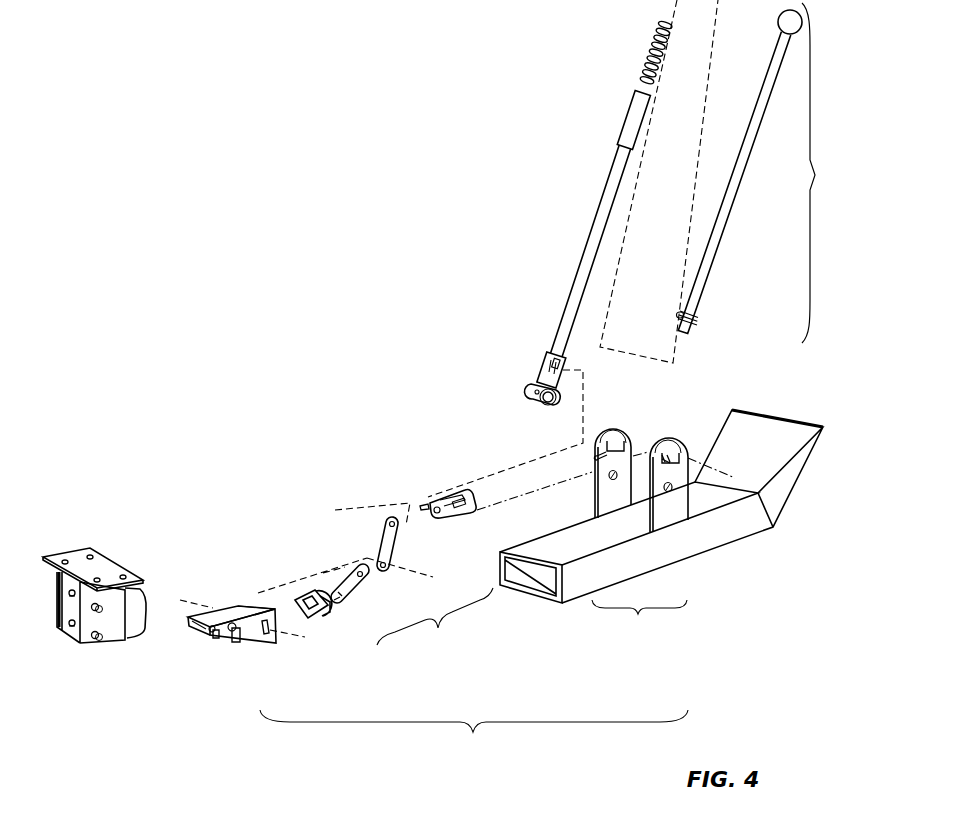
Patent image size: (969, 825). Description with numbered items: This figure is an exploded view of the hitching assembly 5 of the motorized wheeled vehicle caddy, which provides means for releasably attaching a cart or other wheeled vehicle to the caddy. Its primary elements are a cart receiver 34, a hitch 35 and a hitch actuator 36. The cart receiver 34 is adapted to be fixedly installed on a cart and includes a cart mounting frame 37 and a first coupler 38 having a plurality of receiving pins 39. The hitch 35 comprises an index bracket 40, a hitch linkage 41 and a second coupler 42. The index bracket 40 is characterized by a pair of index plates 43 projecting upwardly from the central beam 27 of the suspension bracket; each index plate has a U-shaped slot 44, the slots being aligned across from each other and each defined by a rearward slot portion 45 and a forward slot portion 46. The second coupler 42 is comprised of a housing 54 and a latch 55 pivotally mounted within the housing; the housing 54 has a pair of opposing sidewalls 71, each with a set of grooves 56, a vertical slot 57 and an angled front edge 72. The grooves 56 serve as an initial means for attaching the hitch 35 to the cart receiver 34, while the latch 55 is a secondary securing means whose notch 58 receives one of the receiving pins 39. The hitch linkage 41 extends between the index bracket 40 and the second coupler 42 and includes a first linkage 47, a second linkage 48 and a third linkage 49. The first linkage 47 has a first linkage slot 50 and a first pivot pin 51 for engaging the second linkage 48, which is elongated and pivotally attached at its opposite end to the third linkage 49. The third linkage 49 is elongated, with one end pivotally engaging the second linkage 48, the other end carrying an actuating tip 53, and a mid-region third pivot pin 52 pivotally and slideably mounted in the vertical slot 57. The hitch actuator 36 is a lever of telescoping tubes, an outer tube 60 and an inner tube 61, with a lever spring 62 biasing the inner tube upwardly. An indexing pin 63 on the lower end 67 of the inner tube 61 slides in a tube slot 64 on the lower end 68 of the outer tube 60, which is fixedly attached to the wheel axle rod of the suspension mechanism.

The hitching assembly 5 is at (372, 196).
The central beam 27 is at (808, 472).
The cart receiver 34 is at (50, 570).
The hitch 35 is at (474, 736).
The hitch actuator 36 is at (831, 173).
The cart mounting frame 37 is at (103, 562).
The first coupler 38 is at (53, 619).
The receiving pins 39 is at (72, 598).
The index bracket 40 is at (639, 620).
The hitch linkage 41 is at (435, 622).
The second coupler 42 is at (236, 600).
The index plates 43 is at (603, 500).
The U-shaped slots 44 is at (600, 455).
The rearward slot portion 45 is at (616, 440).
The forward slot portion 46 is at (612, 432).
The first linkage 47 is at (450, 493).
The second linkage 48 is at (398, 541).
The third linkage 49 is at (368, 578).
The first linkage slot 50 is at (482, 502).
The first pivot pin 51 is at (424, 505).
The third pivot pin 52 is at (338, 590).
The actuating tip 53 is at (342, 601).
The housing 54 is at (205, 610).
The latch 55 is at (305, 596).
The grooves 56 is at (236, 641).
The vertical slot 57 is at (266, 634).
The notch 58 is at (314, 620).
The outer tube 60 is at (588, 245).
The inner tube 61 is at (777, 52).
The lever spring 62 is at (653, 52).
The indexing pin 63 is at (545, 358).
The tube slot 64 is at (563, 372).
The lower end 67 is at (680, 320).
The lower end 68 is at (531, 388).
The sidewalls 71 is at (250, 624).
The angled front edge 72 is at (186, 631).